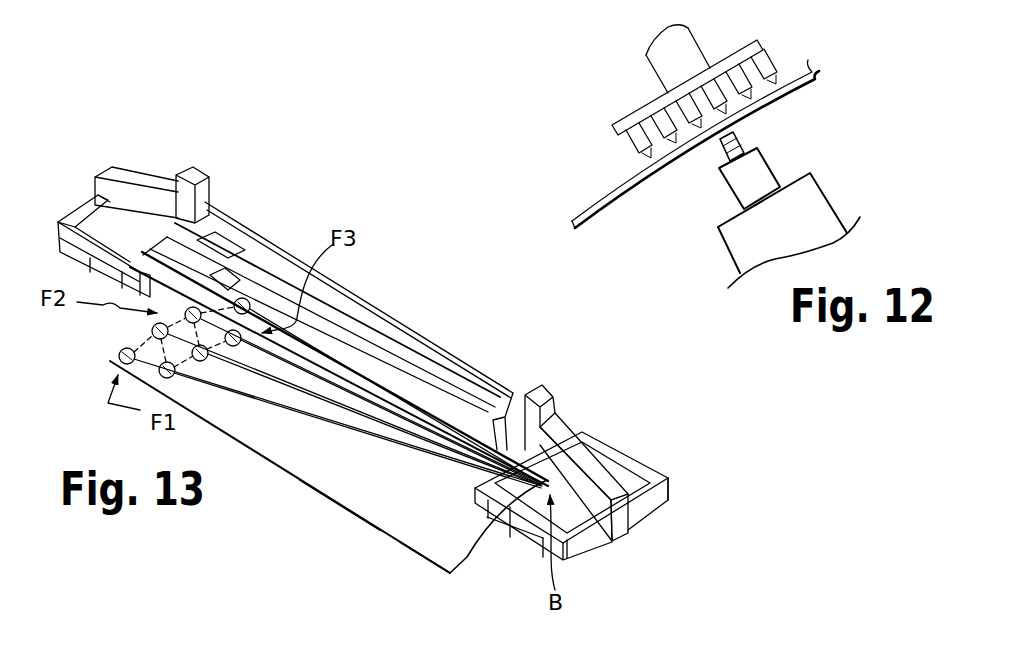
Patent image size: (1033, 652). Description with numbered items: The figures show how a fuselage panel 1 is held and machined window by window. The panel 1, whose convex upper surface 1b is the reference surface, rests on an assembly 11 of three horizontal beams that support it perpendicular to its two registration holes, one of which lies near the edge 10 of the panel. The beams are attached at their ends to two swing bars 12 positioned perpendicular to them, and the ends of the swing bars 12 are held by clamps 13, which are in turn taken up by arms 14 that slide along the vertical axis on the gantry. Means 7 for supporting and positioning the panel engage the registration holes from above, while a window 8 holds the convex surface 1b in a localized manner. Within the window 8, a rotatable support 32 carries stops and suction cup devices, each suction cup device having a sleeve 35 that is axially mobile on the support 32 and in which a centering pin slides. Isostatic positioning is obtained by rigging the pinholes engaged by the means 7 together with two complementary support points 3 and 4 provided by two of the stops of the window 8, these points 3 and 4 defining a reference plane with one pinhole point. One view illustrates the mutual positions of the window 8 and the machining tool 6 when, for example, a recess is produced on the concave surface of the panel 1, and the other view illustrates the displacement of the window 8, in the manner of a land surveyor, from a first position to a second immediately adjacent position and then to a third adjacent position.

In FIG. 13, the panel 1 is at (295, 477).
In FIG. 12, the panel 1 is at (598, 193).
In FIG. 13, the upper convex surface 1b is at (398, 514).
In FIG. 13, the complementary support point 3 is at (112, 358).
In FIG. 13, the complementary support point 4 is at (143, 331).
In FIG. 12, the machining tool 6 is at (641, 155).
In FIG. 13, the means for supporting and positioning the panel 7 is at (655, 450).
In FIG. 12, the window 8 is at (729, 145).
In FIG. 13, the edge of the panel 10 is at (466, 556).
In FIG. 13, the assembly of three horizontal beams 11 is at (407, 320).
In FIG. 13, the swing bars 12 is at (177, 238).
In FIG. 13, the clamps 13 is at (80, 220).
In FIG. 13, the arms 14 is at (137, 182).
In FIG. 12, the rotatable support 32 is at (738, 53).
In FIG. 12, the sleeve 35 is at (662, 92).